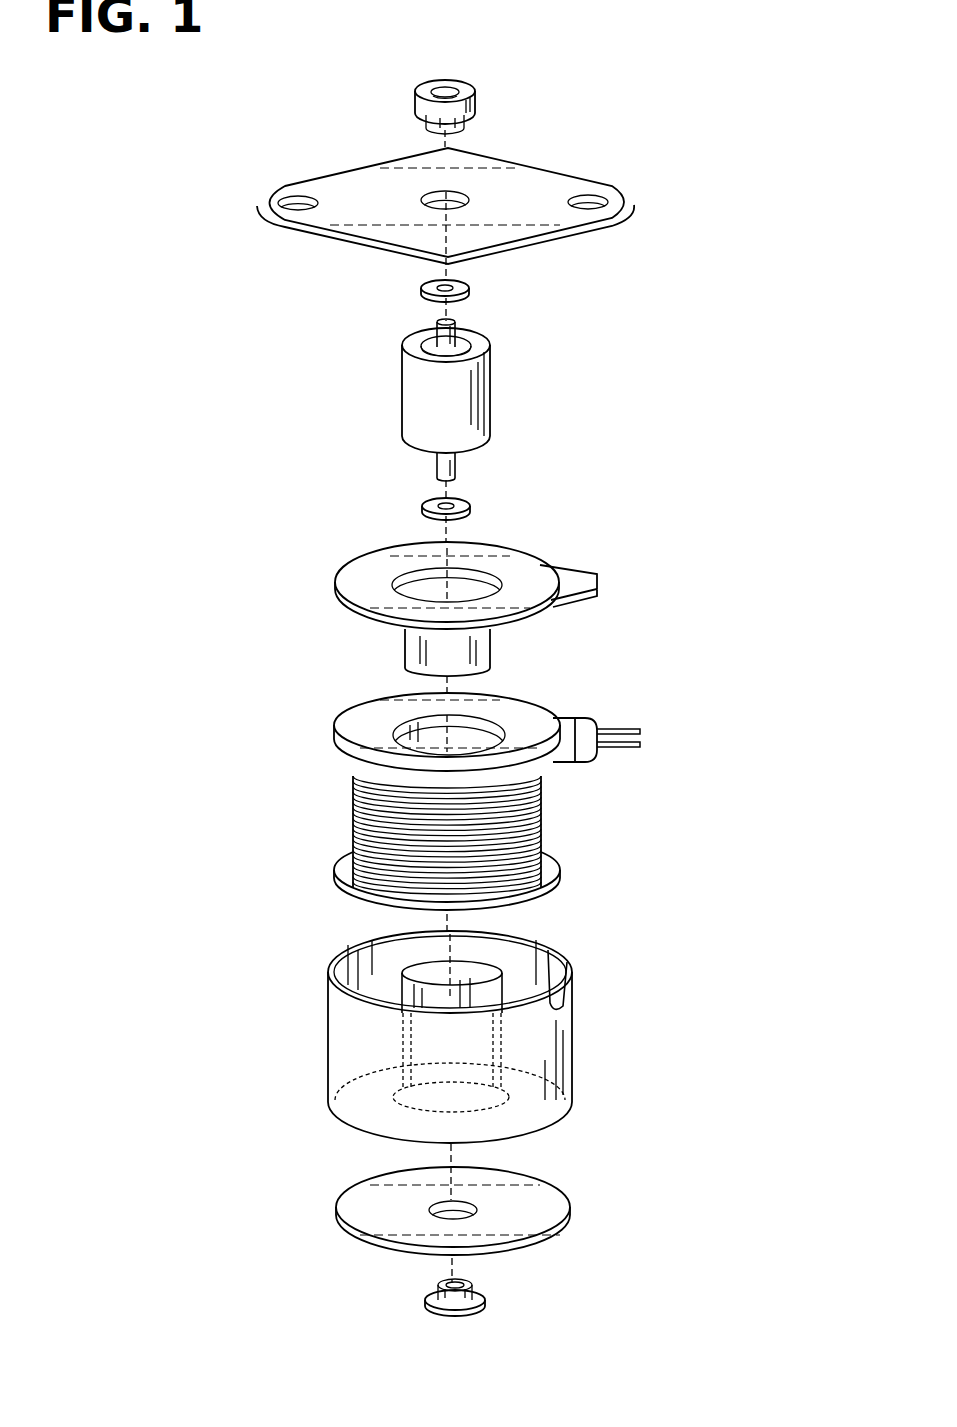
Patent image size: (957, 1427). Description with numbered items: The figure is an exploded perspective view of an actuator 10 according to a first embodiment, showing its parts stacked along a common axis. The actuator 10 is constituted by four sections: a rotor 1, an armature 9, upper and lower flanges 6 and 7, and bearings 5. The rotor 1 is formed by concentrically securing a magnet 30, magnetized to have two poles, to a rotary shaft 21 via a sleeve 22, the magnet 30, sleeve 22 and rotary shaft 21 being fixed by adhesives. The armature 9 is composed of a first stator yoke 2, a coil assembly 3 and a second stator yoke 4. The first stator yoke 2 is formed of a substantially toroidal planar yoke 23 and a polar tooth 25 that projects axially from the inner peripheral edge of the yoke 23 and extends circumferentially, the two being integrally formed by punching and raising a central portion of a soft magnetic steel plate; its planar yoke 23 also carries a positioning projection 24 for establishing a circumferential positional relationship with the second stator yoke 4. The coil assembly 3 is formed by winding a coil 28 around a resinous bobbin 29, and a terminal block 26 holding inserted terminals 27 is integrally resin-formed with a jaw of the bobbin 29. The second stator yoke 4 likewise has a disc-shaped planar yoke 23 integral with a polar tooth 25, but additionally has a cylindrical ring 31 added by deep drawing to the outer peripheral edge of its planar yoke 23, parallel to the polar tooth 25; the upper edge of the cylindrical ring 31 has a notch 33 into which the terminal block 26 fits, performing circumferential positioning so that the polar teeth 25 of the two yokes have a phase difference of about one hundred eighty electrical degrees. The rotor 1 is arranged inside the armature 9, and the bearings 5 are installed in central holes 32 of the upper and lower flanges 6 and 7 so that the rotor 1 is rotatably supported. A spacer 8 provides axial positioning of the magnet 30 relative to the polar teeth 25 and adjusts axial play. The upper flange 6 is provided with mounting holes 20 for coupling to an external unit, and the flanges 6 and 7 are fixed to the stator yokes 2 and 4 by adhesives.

The rotor 1 is at (530, 399).
The first stator yoke 2 is at (540, 846).
The coil assembly 3 is at (552, 803).
The second stator yoke 4 is at (544, 1036).
The bearing 5 is at (478, 90).
The upper flange 6 is at (455, 211).
The lower flange 7 is at (540, 1205).
The spacer 8 is at (470, 288).
The armature 9 is at (310, 550).
The actuator 10 is at (790, 75).
The mounting hole 20 is at (298, 200).
The rotary shaft 21 is at (598, 475).
The sleeve 22 is at (458, 350).
The planar yoke 23 is at (512, 565).
The positioning projection 24 is at (585, 587).
The polar tooth 25 is at (477, 657).
The terminal block 26 is at (580, 735).
The terminals 27 is at (652, 727).
The coil 28 is at (545, 823).
The bobbin 29 is at (491, 884).
The magnet 30 is at (453, 415).
The cylindrical ring 31 is at (552, 1047).
The central hole 32 is at (452, 192).
The notch 33 is at (580, 958).